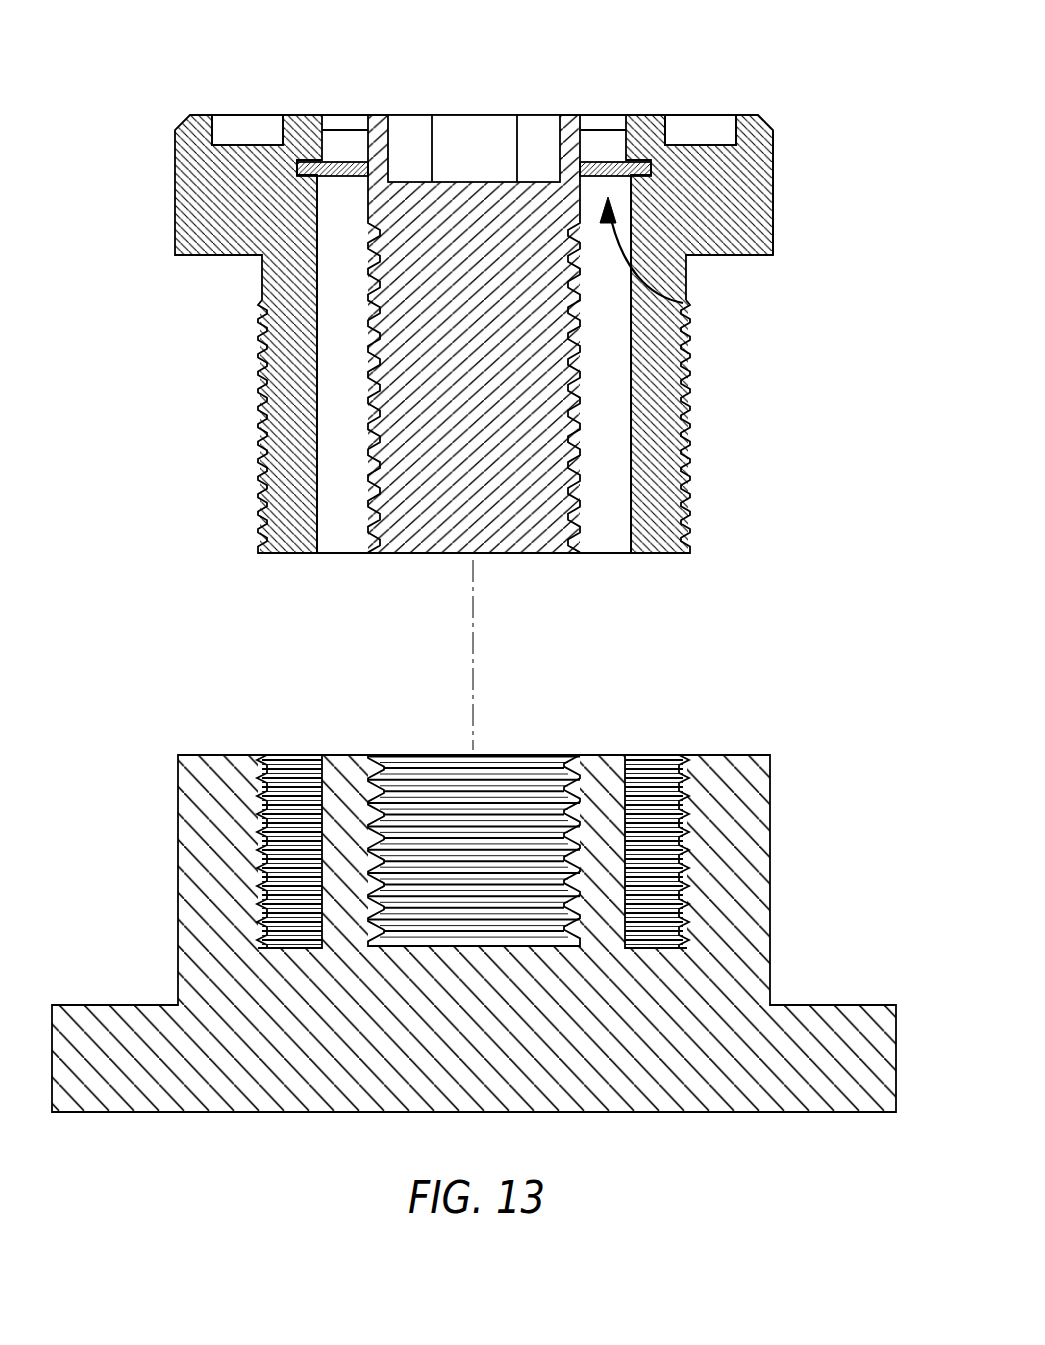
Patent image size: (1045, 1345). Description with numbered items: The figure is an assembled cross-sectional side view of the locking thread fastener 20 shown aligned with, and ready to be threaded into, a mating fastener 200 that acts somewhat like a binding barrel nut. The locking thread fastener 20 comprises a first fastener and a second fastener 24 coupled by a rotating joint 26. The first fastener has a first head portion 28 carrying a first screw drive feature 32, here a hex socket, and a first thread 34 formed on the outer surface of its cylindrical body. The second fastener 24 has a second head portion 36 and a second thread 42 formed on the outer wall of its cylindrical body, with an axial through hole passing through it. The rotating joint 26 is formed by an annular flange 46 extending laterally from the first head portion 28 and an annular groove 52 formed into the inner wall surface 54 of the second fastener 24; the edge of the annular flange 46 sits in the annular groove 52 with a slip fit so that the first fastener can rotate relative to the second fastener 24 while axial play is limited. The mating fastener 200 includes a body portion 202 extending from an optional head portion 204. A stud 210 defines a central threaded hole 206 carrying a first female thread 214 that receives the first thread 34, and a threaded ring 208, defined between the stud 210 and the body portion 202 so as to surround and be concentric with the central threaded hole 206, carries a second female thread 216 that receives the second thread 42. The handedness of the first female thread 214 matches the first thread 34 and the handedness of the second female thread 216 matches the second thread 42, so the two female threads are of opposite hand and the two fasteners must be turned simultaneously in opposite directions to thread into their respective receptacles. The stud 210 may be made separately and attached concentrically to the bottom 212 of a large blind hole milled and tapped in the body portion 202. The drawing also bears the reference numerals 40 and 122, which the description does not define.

The locking thread fastener 20 is at (698, 84).
The second fastener 24 is at (618, 178).
The rotating joint 26 is at (660, 301).
The first head portion 28 is at (381, 148).
The first screw drive feature 32 is at (474, 140).
The first thread 34 is at (578, 488).
The second head portion 36 is at (776, 167).
The upper end of sleeve 40 is at (235, 105).
The second thread 42 is at (262, 402).
The annular flange 46 is at (340, 160).
The annular groove 52 is at (308, 175).
The inner wall surface 54 is at (343, 516).
The bottom surface of plug 122 is at (523, 554).
The mating fastener 200 is at (765, 670).
The body portion 202 is at (769, 916).
The head portion 204 is at (825, 1113).
The central threaded hole 206 is at (488, 755).
The threaded ring 208 is at (300, 755).
The stud 210 is at (350, 755).
The bottom 212 is at (298, 948).
The first female thread 214 is at (420, 775).
The second female thread 216 is at (292, 841).